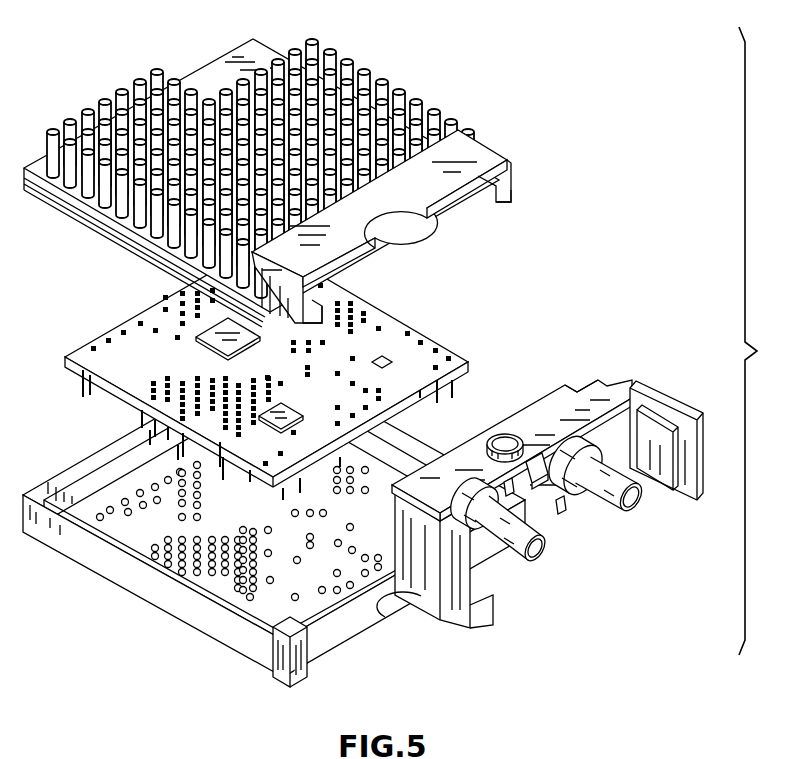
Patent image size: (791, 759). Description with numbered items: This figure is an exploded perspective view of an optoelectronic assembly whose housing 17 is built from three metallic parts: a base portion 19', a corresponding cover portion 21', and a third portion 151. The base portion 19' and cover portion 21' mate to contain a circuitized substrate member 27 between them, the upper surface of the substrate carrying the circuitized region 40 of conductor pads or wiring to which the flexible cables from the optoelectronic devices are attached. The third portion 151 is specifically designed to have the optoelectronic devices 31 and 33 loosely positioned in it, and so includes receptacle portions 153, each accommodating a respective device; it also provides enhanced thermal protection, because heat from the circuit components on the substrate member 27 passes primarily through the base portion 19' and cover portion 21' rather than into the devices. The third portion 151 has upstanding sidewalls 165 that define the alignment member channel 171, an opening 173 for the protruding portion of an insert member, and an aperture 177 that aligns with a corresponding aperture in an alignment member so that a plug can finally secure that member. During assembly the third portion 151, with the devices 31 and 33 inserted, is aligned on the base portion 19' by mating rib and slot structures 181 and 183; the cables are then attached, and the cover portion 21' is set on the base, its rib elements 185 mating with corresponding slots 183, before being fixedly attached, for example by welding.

The housing 17 is at (507, 132).
The base portion 19' is at (274, 516).
The cover portion 21' is at (261, 166).
The substrate member 27 is at (433, 334).
The optoelectronic device 31 is at (543, 559).
The optoelectronic device 33 is at (645, 509).
The circuitized region 40 is at (174, 344).
The third portion 151 is at (587, 384).
The receptacle portions 153 is at (562, 508).
The upstanding sidewalls 165 is at (676, 396).
The alignment member channel 171 is at (485, 582).
The opening 173 is at (545, 468).
The aperture 177 is at (492, 460).
The rib structure 181 is at (313, 627).
The slot structure 183 is at (567, 386).
The rib elements 185 is at (462, 195).